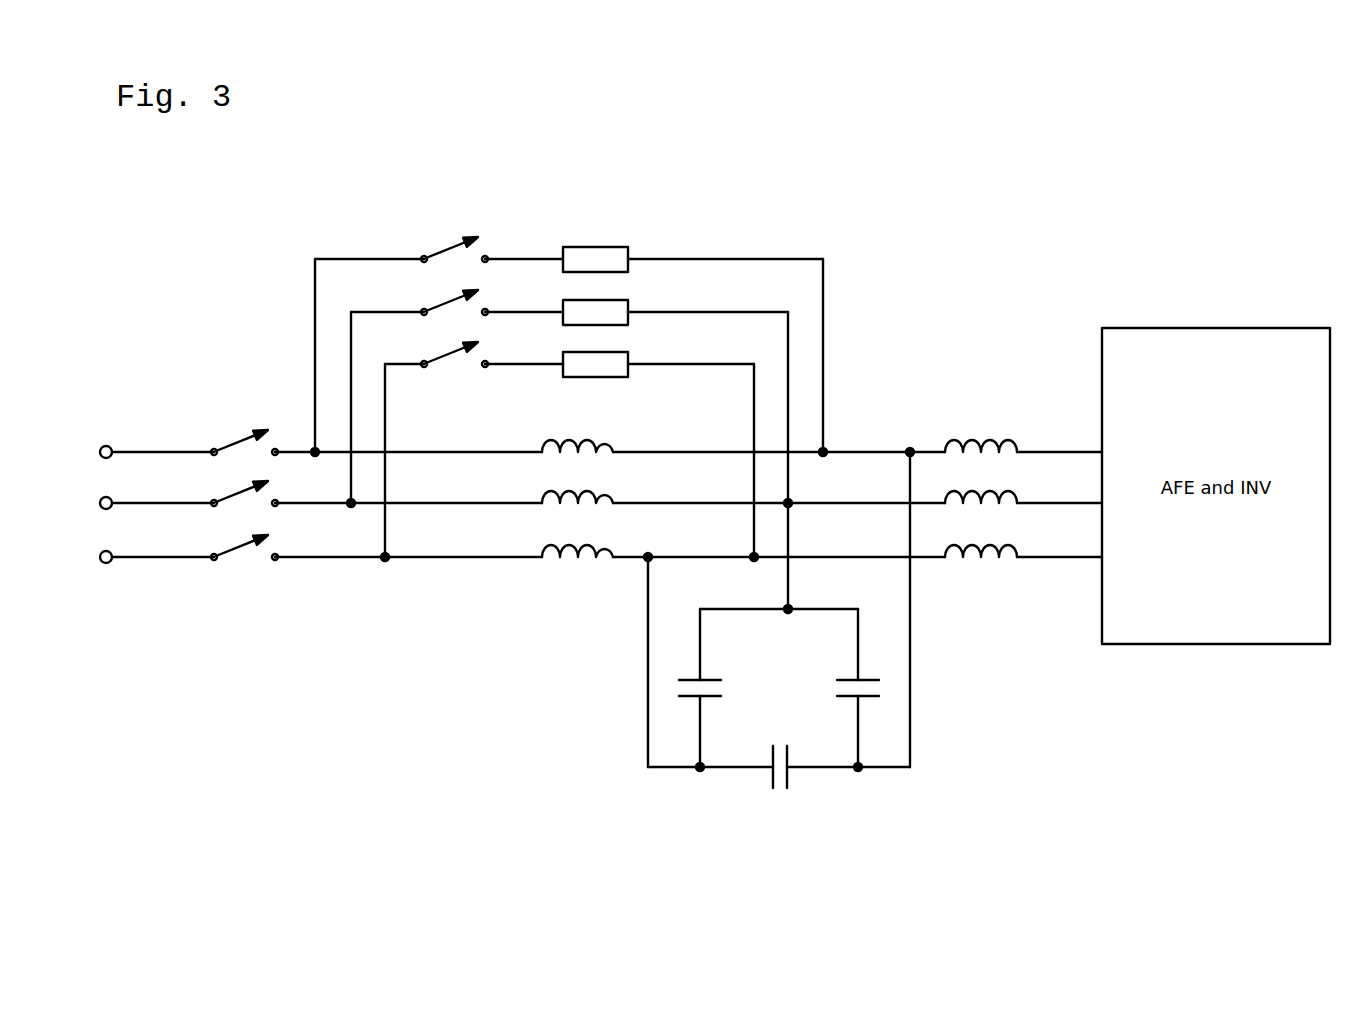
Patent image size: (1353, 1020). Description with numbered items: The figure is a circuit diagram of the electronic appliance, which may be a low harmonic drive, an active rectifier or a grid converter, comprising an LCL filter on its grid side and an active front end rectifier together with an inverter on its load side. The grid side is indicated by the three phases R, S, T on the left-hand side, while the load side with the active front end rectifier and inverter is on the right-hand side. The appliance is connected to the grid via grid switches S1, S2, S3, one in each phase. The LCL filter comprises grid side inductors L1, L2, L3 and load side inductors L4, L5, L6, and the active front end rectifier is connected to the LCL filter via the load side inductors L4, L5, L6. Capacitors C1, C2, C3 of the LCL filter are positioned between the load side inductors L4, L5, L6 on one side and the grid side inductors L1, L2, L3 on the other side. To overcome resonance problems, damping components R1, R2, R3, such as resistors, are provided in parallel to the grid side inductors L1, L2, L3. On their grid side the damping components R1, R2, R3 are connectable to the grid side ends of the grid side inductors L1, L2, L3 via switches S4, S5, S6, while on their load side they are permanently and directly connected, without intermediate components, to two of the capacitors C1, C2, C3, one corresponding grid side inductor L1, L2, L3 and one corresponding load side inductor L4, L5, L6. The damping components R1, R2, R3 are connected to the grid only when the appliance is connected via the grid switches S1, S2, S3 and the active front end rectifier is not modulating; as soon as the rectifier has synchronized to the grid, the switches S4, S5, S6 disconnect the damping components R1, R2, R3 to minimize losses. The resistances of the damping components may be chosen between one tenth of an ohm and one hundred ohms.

The grid phase R is at (142, 452).
The grid phase S is at (142, 503).
The grid phase T is at (142, 557).
The grid switch S1 is at (224, 438).
The grid switch S2 is at (224, 489).
The grid switch S3 is at (224, 543).
The switch S4 is at (401, 244).
The switch S5 is at (419, 297).
The switch S6 is at (434, 349).
The damping component R1 is at (654, 248).
The damping component R2 is at (636, 301).
The damping component R3 is at (619, 353).
The grid side inductor L1 is at (585, 432).
The grid side inductor L2 is at (585, 485).
The grid side inductor L3 is at (585, 538).
The load side inductor L4 is at (988, 433).
The load side inductor L5 is at (988, 485).
The load side inductor L6 is at (988, 538).
The capacitor C1 is at (693, 688).
The capacitor C2 is at (797, 751).
The capacitor C3 is at (851, 688).